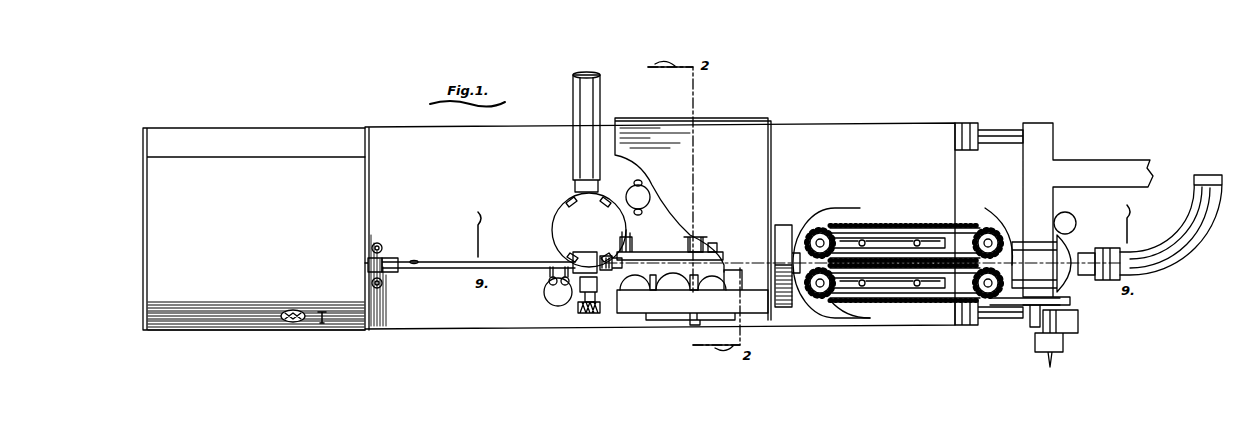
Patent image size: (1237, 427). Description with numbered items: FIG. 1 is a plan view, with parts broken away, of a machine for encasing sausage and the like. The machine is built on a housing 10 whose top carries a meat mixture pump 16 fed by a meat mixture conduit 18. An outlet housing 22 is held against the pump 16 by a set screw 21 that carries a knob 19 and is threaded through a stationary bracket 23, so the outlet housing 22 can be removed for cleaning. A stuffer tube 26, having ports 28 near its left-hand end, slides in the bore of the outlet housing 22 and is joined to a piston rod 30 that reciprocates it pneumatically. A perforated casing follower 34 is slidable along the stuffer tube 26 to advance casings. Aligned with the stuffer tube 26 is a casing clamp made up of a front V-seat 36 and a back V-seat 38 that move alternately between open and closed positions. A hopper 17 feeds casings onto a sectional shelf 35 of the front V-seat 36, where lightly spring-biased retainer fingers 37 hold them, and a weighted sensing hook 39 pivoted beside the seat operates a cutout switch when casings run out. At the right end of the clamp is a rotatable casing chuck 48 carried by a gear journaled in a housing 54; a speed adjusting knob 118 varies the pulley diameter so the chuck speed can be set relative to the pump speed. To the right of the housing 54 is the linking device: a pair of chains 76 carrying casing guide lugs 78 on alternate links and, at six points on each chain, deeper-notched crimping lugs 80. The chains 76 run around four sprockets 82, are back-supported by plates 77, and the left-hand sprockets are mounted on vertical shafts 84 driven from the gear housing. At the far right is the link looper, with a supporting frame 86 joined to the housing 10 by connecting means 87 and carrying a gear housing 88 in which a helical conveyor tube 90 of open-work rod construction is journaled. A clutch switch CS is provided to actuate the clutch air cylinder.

The housing 10 is at (842, 120).
The meat mixture pump 16 is at (553, 222).
The hopper 17 is at (762, 157).
The meat mixture conduit 18 is at (577, 103).
The knob 19 is at (460, 160).
The set screw 21 is at (585, 274).
The outlet housing 22 is at (571, 307).
The stationary bracket 23 is at (598, 285).
The stuffer tube 26 is at (461, 259).
The ports 28 is at (414, 260).
The piston rod 30 is at (367, 264).
The casing follower 34 is at (629, 248).
The sectional shelf 35 is at (668, 283).
The front V-seat 36 is at (658, 318).
The retainer fingers 37 is at (648, 286).
The back V-seat 38 is at (714, 246).
The weighted sensing hook 39 is at (705, 286).
The casing chuck 48 is at (806, 232).
The housing 54 is at (783, 232).
The chains 76 is at (916, 236).
The plates 77 is at (900, 238).
The casing guide lugs 78 is at (998, 234).
The crimping lugs 80 is at (824, 236).
The sprockets 82 is at (808, 306).
The vertical shafts 84 is at (1008, 248).
The supporting frame 86 is at (1083, 167).
The connecting means 87 is at (970, 123).
The gear housing 88 is at (1073, 279).
The helical conveyor tube 90 is at (1190, 256).
The speed adjusting knob 118 is at (634, 192).
The clutch switch CS is at (1082, 333).